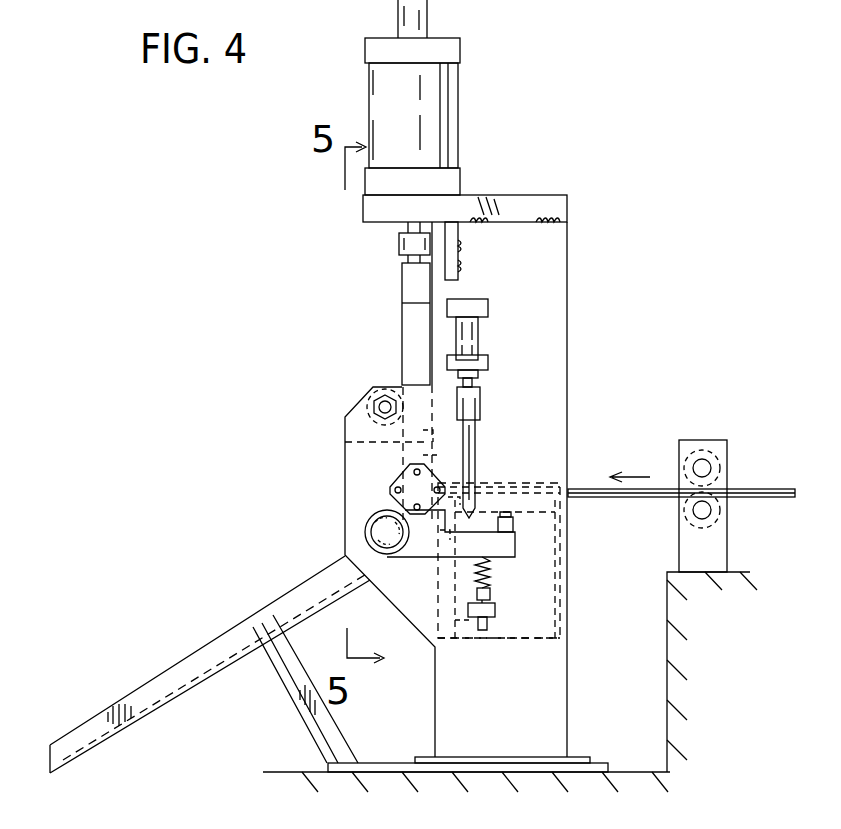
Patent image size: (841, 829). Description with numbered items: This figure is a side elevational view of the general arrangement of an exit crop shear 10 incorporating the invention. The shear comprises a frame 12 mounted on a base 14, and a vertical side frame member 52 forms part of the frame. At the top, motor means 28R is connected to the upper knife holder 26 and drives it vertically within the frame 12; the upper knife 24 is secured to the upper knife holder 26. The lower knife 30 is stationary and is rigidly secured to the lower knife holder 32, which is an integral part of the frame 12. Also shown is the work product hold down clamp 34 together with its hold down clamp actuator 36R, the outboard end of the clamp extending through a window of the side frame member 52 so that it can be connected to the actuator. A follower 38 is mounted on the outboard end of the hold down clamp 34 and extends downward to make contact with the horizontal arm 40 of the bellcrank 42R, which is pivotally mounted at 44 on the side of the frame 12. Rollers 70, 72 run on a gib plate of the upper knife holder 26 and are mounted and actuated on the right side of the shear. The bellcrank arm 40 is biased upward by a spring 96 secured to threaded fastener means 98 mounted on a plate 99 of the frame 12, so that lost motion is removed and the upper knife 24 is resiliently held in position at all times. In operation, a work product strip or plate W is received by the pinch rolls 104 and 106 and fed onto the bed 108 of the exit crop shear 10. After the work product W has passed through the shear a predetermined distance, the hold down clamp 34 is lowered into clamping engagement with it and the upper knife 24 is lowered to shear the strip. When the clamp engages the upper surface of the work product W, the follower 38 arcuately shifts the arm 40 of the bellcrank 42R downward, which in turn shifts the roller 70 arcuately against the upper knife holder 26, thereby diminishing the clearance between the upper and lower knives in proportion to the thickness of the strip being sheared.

The exit crop shear 10 is at (273, 252).
The frame 12 is at (570, 266).
The base 14 is at (604, 763).
The upper knife 24 is at (345, 443).
The upper knife holder 26 is at (412, 357).
The motor means 28R is at (444, 100).
The lower knife 30 is at (480, 495).
The lower knife holder 32 is at (438, 612).
The work product hold down clamp 34 is at (480, 452).
The hold down clamp actuator 36R is at (476, 330).
The follower 38 is at (490, 462).
The horizontal arm 40 is at (516, 546).
The bellcrank 42R is at (418, 570).
The pivotal mounting 44 is at (386, 531).
The vertical side frame member 52 is at (452, 722).
The roller 70 is at (374, 502).
The roller 72 is at (366, 412).
The spring 96 is at (490, 570).
The threaded fastener means 98 is at (492, 597).
The plate 99 is at (496, 612).
The pinch roll 104 is at (710, 524).
The pinch roll 106 is at (720, 468).
The bed 108 is at (598, 490).
The work product W is at (660, 489).